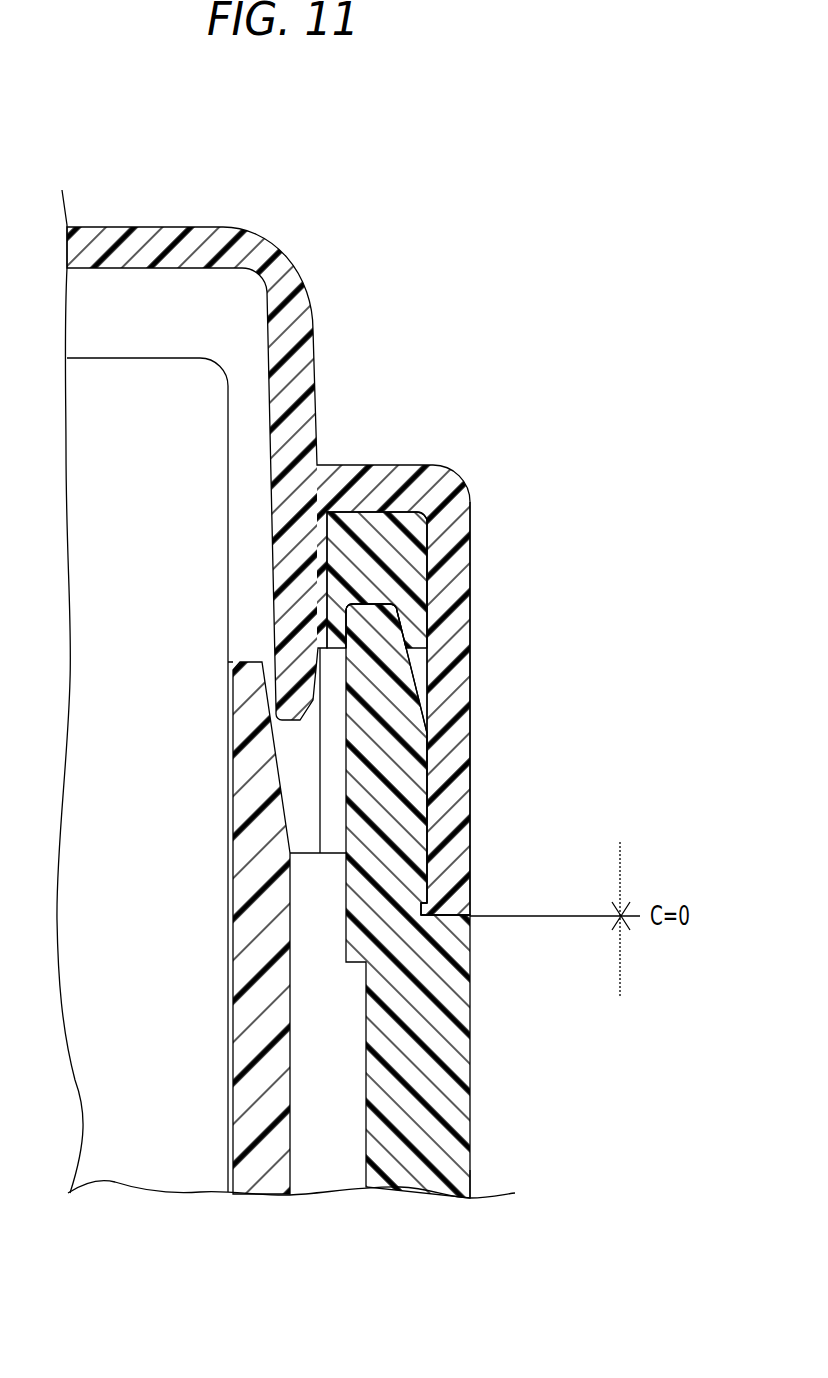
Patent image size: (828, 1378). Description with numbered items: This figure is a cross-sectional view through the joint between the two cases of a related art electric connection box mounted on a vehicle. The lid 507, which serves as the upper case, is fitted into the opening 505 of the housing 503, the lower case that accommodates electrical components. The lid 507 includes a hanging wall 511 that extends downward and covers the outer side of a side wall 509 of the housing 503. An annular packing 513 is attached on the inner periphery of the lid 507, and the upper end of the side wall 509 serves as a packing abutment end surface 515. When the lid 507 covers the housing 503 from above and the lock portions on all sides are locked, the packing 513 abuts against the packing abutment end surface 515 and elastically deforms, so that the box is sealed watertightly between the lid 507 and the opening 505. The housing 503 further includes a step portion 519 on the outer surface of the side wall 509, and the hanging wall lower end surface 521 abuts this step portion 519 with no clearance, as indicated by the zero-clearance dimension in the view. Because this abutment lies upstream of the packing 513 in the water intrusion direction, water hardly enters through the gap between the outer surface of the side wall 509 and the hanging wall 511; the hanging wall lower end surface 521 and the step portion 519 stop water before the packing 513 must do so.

The lid 507 is at (112, 218).
The opening 505 is at (250, 662).
The annular packing 513 is at (403, 543).
The packing abutment end surface 515 is at (363, 602).
The hanging wall 511 is at (470, 790).
The step portion 519 is at (455, 917).
The side wall 509 is at (472, 1128).
The hanging wall lower end surface 521 is at (467, 870).
The housing 503 is at (472, 1206).